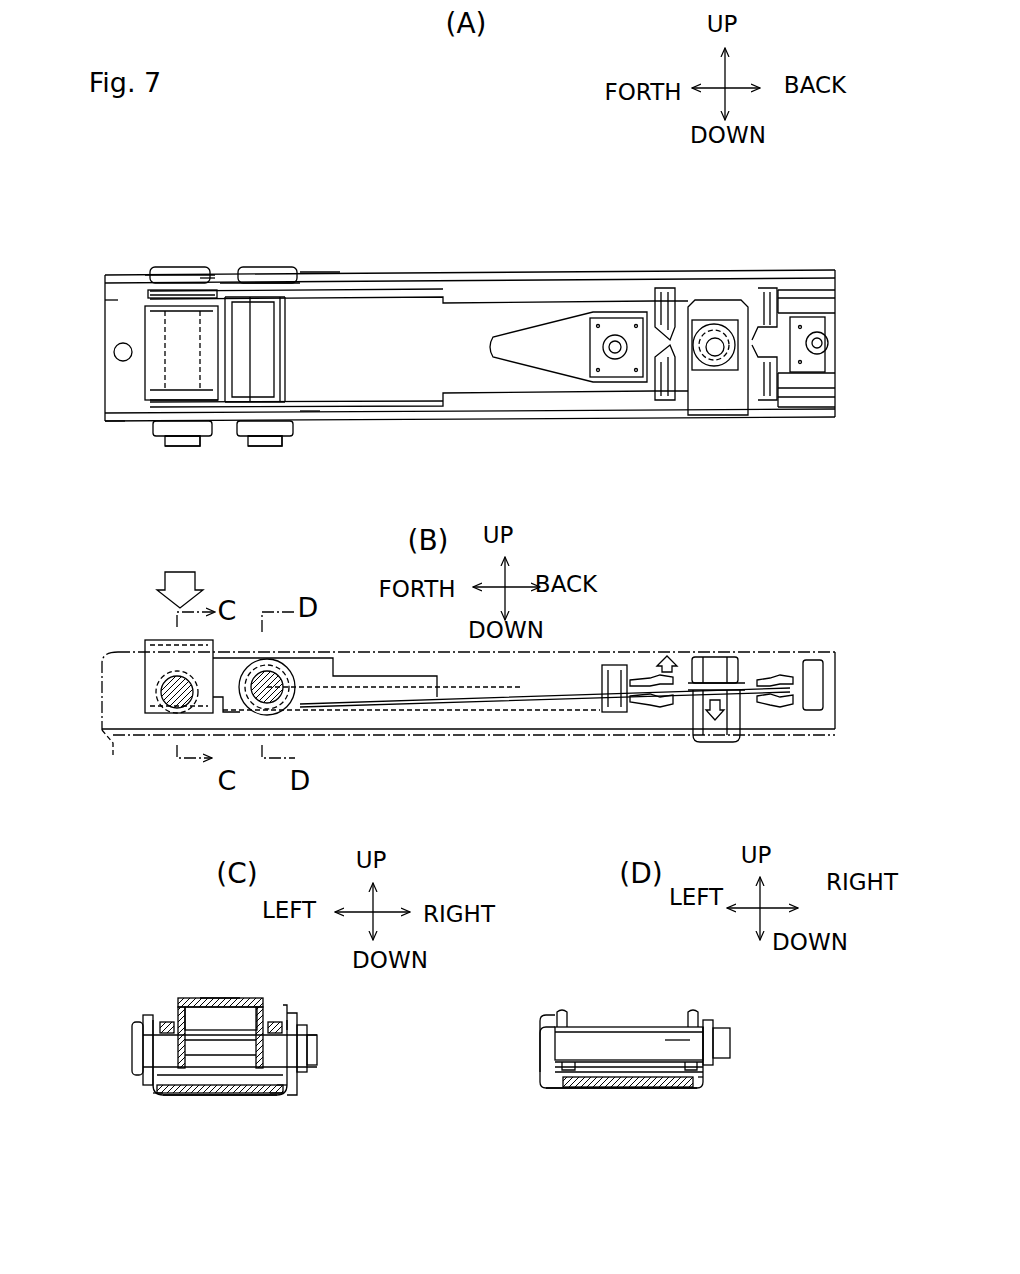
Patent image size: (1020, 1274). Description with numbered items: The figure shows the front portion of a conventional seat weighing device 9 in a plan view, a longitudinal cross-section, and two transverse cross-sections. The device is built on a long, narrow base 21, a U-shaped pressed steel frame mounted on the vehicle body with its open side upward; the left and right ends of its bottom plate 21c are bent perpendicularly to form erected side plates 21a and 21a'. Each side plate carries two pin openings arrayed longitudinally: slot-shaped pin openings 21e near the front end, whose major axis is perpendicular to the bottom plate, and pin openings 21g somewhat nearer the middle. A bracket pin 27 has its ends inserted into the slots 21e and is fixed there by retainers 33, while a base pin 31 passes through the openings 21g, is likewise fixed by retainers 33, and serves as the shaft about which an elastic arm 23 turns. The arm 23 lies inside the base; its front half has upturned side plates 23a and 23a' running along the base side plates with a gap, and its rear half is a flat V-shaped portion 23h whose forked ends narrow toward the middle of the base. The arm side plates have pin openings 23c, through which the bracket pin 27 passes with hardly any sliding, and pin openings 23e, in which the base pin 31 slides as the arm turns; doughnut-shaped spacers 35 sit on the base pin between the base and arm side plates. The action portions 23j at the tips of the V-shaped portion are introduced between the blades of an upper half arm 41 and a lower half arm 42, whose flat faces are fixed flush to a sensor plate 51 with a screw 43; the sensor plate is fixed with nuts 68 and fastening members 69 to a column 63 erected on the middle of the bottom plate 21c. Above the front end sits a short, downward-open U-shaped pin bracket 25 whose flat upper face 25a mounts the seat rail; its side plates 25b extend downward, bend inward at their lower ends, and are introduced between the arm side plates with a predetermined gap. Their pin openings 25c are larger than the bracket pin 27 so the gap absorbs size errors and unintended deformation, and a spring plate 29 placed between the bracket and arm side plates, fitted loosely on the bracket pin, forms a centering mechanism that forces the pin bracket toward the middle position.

The seat weighing device 9 is at (480, 175).
The base 21 is at (118, 276).
The side plate 21a is at (453, 680).
The side plate 21a' is at (303, 768).
The bottom plate 21c is at (113, 301).
The pin opening 21e is at (222, 296).
The pin opening 21g is at (280, 283).
The arm 23 is at (152, 290).
The side plate 23a is at (275, 680).
The side plate 23a' is at (236, 782).
The pin opening 23c is at (168, 291).
The pin opening 23e is at (296, 268).
The V-shaped portion 23h is at (535, 317).
The action portion 23j is at (648, 290).
The pin bracket 25 is at (172, 328).
The upper face 25a is at (230, 998).
The side plate 25b is at (178, 1020).
The pin opening 25c is at (173, 1053).
The bracket pin 27 is at (180, 436).
The spring plate 29 is at (160, 400).
The base pin 31 is at (283, 367).
The retainer 33 is at (200, 436).
The spacer 35 is at (330, 272).
The upper half arm 41 is at (677, 310).
The lower half arm 42 is at (640, 707).
The screw 43 is at (613, 323).
The sensor plate 51 is at (700, 317).
The column 63 is at (760, 713).
The nut 68 is at (712, 323).
The fastening member 69 is at (728, 330).